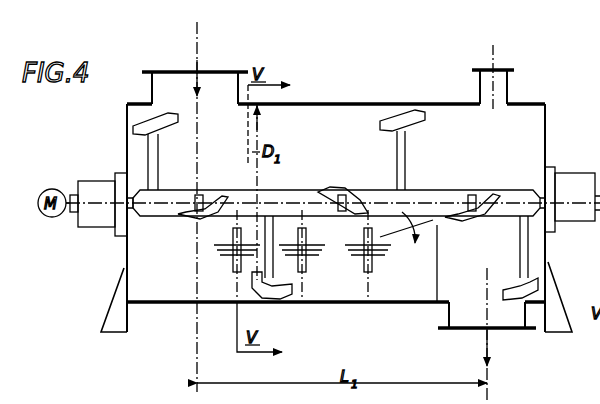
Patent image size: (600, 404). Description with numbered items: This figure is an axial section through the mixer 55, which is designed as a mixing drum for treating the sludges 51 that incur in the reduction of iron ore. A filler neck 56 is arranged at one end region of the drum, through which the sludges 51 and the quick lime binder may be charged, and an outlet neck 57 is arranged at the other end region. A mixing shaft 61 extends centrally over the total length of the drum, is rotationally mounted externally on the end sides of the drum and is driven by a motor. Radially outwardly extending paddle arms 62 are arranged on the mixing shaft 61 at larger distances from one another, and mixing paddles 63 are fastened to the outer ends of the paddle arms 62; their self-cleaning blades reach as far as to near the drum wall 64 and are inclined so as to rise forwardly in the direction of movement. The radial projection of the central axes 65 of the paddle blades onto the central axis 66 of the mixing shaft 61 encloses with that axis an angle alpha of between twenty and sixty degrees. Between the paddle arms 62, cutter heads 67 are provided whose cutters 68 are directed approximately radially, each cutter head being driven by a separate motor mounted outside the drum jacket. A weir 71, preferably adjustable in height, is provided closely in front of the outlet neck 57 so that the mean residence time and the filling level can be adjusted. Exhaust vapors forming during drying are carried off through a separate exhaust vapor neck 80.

The sludges 51 is at (195, 57).
The mixer 55 is at (336, 174).
The filler neck 56 is at (209, 80).
The outlet neck 57 is at (470, 322).
The mixing shaft 61 is at (273, 195).
The paddle arms 62 is at (403, 155).
The mixing paddles 63 is at (413, 118).
The drum wall 64 is at (340, 103).
The central axes of the paddle blades 65 is at (433, 220).
The central axis of the mixing shaft 66 is at (450, 199).
The cutter heads 67 is at (350, 260).
The cutters 68 is at (317, 258).
The weir 71 is at (438, 267).
The exhaust vapor neck 80 is at (497, 77).